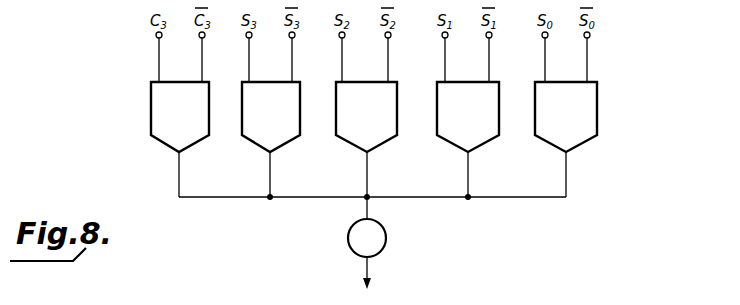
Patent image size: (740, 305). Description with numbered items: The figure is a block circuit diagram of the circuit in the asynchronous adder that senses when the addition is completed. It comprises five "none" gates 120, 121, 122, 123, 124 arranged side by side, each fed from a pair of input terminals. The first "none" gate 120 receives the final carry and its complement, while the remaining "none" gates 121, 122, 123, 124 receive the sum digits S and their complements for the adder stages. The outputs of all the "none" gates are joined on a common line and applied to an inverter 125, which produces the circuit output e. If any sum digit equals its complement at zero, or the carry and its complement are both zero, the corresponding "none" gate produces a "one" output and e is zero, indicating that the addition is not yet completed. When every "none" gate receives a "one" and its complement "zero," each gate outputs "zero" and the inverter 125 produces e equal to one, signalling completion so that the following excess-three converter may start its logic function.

The first "none" gate 120 is at (167, 139).
The "none" gate 121 is at (259, 139).
The "none" gate 122 is at (358, 149).
The "none" gate 123 is at (460, 150).
The "none" gate 124 is at (558, 147).
The inverter 125 is at (386, 236).